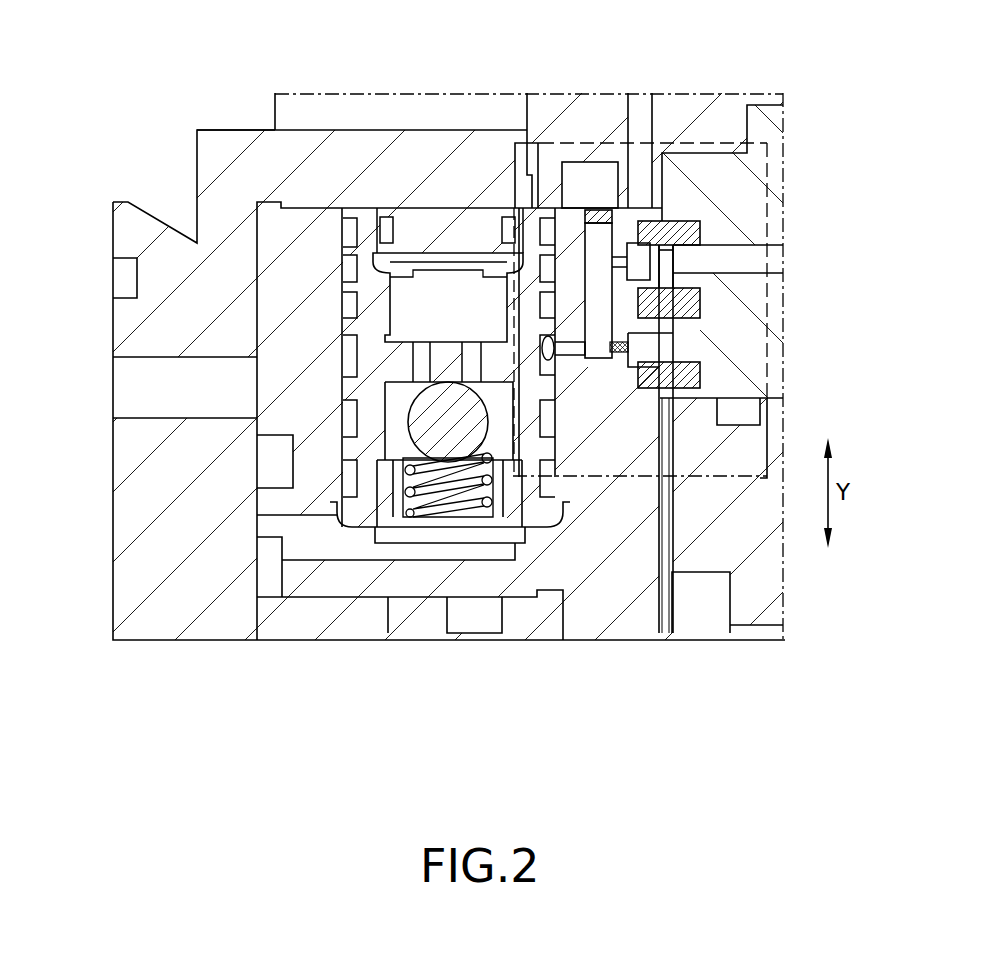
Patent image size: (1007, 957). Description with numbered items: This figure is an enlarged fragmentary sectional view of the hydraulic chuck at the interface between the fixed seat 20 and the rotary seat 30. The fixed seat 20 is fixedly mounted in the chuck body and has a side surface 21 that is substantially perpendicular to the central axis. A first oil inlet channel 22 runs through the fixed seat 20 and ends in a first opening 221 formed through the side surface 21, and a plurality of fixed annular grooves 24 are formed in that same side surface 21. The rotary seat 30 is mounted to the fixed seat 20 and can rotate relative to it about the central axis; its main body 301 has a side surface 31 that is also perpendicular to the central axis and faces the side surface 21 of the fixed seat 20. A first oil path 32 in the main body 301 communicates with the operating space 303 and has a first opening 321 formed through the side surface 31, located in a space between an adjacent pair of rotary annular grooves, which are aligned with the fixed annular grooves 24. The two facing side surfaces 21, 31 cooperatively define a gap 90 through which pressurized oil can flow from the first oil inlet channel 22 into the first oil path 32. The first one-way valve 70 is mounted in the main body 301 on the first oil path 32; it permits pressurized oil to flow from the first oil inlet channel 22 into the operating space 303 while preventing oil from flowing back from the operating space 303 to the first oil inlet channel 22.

The rotary seat 30 is at (311, 135).
The operating space 303 is at (330, 628).
The main body 301 is at (601, 603).
The fixed seat 20 is at (738, 181).
The side surface 21 is at (660, 207).
The first oil inlet channel 22 is at (748, 264).
The first opening 221 is at (673, 258).
The fixed annular grooves 24 is at (703, 237).
The side surface 31 is at (653, 211).
The first oil path 32 is at (630, 256).
The first opening 321 is at (640, 245).
The first one-way valve 70 is at (418, 433).
The gap 90 is at (662, 252).